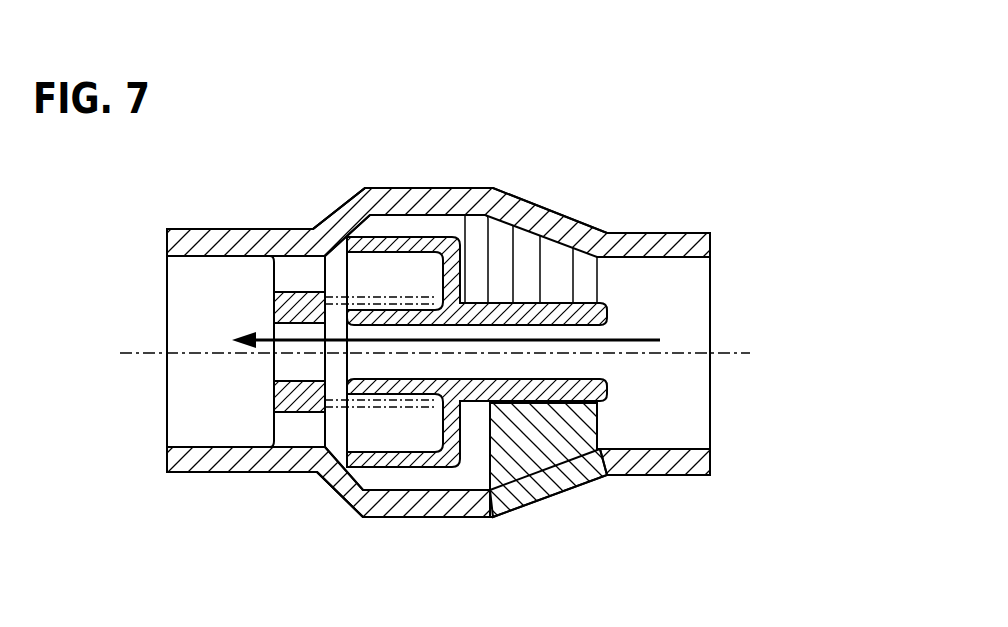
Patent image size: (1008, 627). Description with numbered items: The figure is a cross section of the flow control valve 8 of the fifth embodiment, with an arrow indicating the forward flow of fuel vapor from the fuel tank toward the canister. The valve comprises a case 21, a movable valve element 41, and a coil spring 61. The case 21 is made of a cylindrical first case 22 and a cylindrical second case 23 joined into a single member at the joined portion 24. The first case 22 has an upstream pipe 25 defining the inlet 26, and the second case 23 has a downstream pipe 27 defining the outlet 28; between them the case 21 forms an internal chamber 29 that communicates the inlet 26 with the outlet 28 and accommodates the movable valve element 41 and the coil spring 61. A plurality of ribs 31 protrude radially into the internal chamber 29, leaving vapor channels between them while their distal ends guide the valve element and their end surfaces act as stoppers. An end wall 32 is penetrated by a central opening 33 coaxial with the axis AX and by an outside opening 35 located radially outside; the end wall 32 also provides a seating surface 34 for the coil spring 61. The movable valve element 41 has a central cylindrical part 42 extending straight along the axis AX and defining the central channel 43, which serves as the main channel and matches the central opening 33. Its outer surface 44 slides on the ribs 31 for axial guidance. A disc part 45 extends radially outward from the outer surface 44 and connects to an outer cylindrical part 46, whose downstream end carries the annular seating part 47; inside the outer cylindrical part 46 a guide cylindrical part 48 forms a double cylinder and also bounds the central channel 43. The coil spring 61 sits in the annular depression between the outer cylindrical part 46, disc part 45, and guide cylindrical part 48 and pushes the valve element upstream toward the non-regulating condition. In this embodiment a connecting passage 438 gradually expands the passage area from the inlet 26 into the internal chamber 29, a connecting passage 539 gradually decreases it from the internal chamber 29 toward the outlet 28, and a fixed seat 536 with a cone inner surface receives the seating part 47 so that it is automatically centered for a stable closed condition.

The flow control valve 8 is at (728, 175).
The case 21 is at (627, 257).
The first case 22 is at (443, 518).
The second case 23 is at (367, 518).
The joined portion 24 is at (393, 467).
The upstream pipe 25 is at (677, 475).
The inlet 26 is at (655, 421).
The downstream pipe 27 is at (215, 473).
The outlet 28 is at (212, 423).
The internal chamber 29 is at (470, 518).
The ribs 31 is at (533, 435).
The end wall 32 is at (285, 393).
The central opening 33 is at (290, 352).
The seating surface 34 is at (282, 317).
The outside opening 35 is at (290, 281).
The movable valve element 41 is at (573, 249).
The central cylindrical part 42 is at (540, 238).
The central channel 43 is at (597, 332).
The outer surface 44 is at (513, 228).
The disc part 45 is at (467, 215).
The outer cylindrical part 46 is at (417, 237).
The seating part 47 is at (332, 250).
The guide cylindrical part 48 is at (395, 305).
The coil spring 61 is at (373, 405).
The connecting passage 438 is at (510, 480).
The fixed seat 536 is at (312, 231).
The connecting passage 539 is at (330, 485).
The axis AX is at (727, 355).